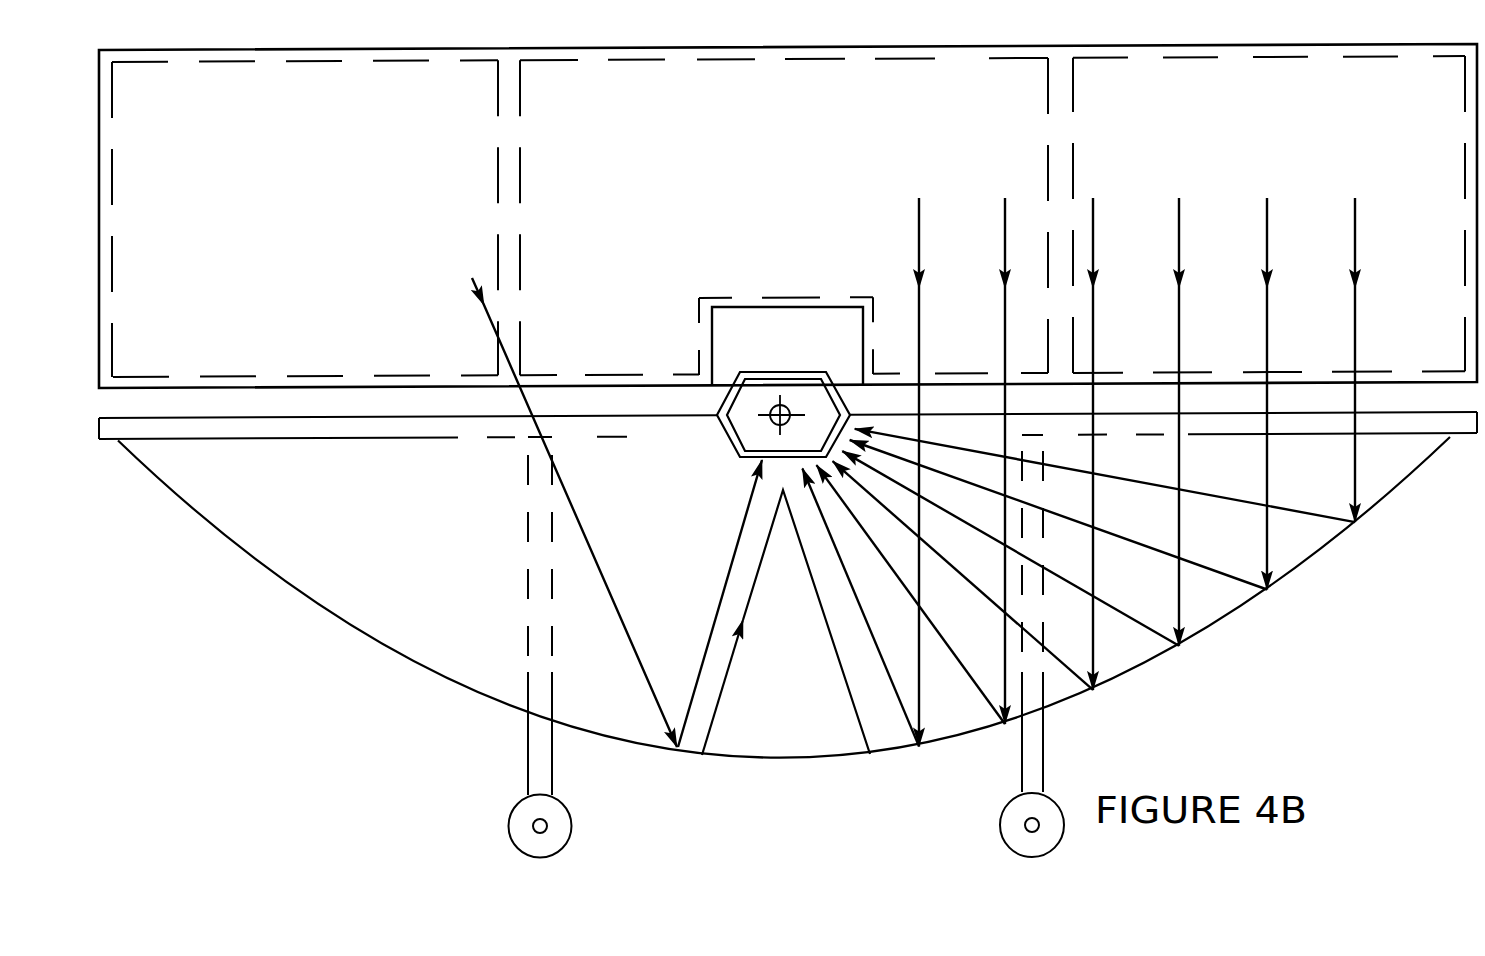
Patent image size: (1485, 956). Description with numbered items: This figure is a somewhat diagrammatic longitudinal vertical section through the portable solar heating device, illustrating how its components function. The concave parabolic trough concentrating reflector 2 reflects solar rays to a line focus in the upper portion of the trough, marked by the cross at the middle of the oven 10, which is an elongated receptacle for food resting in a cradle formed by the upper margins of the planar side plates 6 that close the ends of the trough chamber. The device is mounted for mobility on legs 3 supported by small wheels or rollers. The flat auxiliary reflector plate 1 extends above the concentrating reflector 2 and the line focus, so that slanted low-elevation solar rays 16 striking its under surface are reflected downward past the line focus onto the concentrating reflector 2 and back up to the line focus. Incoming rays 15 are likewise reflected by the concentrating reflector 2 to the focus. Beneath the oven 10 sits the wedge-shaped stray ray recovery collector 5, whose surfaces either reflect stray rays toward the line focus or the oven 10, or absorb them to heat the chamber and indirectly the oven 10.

The auxiliary flat reflector plate 1 is at (1417, 352).
The concave parabolic trough concentrating reflector 2 is at (402, 660).
The legs 3 is at (525, 790).
The stray ray recovery collector 5 is at (735, 672).
The planar side plates 6 is at (368, 573).
The oven 10 is at (745, 357).
The incident rays 15 is at (880, 208).
The slanted solar rays 16 is at (609, 499).